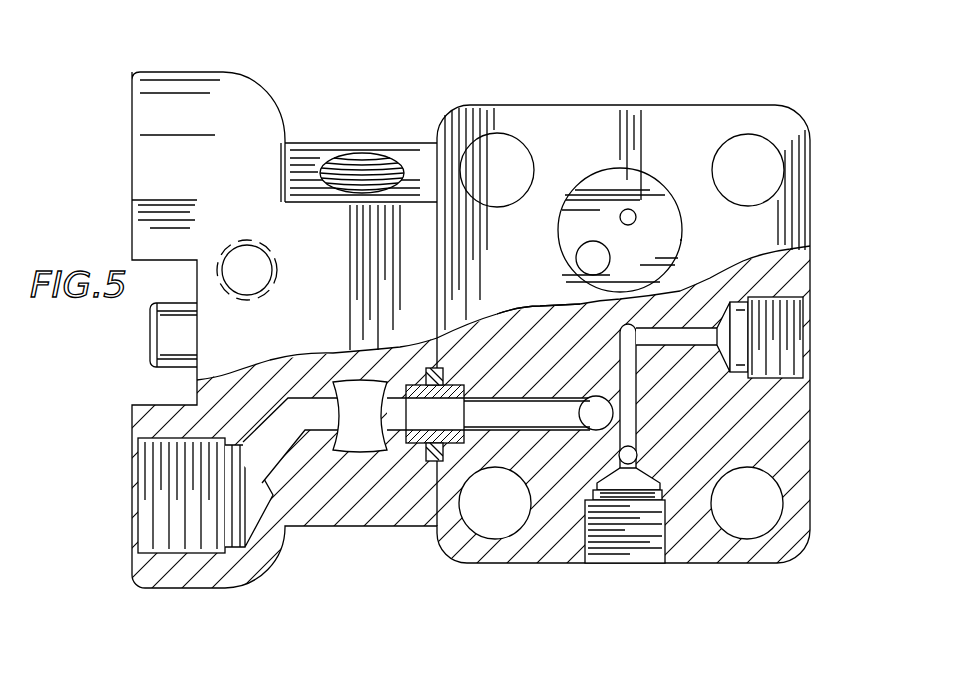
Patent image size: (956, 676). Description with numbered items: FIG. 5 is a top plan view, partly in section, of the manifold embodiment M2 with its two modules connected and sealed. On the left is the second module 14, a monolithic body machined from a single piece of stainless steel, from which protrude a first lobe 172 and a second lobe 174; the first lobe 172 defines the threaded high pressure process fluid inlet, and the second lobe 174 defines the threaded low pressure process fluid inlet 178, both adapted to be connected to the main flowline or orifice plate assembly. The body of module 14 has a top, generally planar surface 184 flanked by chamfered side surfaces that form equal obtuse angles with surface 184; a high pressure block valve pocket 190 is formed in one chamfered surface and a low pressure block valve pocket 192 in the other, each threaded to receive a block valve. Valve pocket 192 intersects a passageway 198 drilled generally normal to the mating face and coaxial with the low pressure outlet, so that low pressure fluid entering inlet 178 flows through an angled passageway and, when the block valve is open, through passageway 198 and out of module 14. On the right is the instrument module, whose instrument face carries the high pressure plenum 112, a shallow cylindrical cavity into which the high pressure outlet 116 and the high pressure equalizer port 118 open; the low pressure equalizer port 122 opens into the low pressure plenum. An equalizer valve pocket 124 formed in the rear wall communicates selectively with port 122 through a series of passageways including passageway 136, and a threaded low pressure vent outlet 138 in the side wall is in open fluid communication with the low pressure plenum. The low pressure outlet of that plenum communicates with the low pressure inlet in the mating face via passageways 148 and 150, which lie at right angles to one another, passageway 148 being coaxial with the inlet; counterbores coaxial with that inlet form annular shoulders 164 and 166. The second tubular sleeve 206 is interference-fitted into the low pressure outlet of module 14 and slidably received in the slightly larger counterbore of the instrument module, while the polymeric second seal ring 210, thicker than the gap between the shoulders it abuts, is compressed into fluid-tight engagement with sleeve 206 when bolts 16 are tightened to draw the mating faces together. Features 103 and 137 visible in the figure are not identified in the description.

The second module 14 is at (213, 58).
The first lobe 172 is at (153, 88).
The second lobe 174 is at (155, 573).
The manifold embodiment M2 is at (818, 100).
The mounting holes 103 is at (482, 150).
The high pressure plenum 112 is at (600, 185).
The high pressure equalizer port 118 is at (628, 209).
The high pressure outlet 116 is at (585, 260).
The passageway 150 is at (518, 337).
The high pressure block valve pocket 190 is at (352, 163).
The top planar surface 184 is at (322, 250).
The bolts 16 is at (150, 335).
The low pressure process fluid inlet 178 is at (147, 505).
The passageway 198 is at (312, 420).
The low pressure block valve pocket 192 is at (350, 440).
The annular shoulder 164 is at (452, 447).
The passageway 148 is at (555, 422).
The annular shoulder 166 is at (430, 367).
The second tubular sleeve 206 is at (407, 385).
The second seal ring 210 is at (432, 462).
The vertical passage 137 is at (632, 422).
The passageway 136 is at (707, 340).
The equalizer valve pocket 124 is at (783, 355).
The low pressure vent outlet 138 is at (622, 545).
The low pressure equalizer port 122 is at (630, 463).